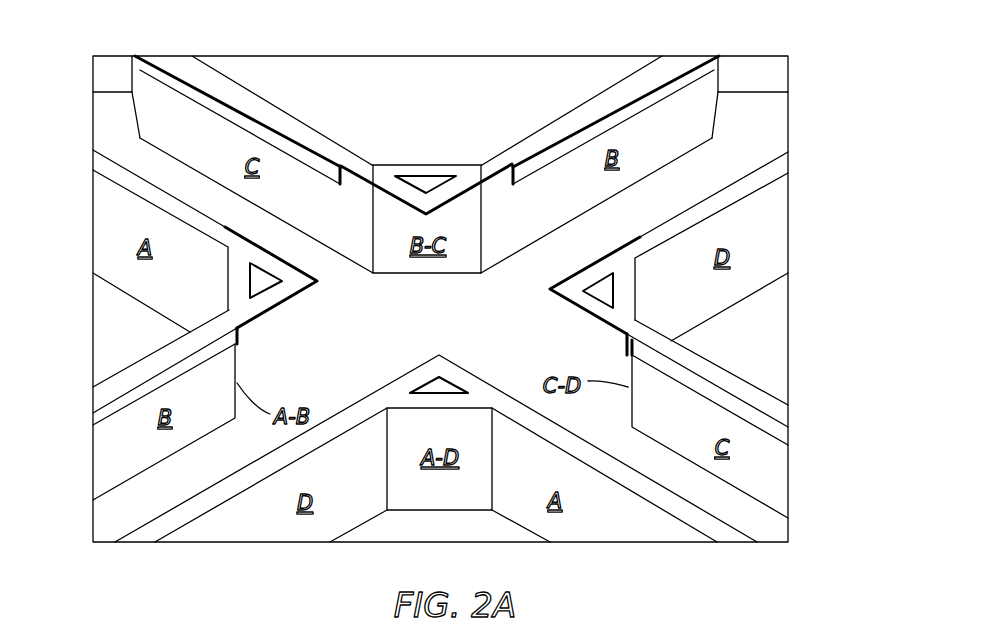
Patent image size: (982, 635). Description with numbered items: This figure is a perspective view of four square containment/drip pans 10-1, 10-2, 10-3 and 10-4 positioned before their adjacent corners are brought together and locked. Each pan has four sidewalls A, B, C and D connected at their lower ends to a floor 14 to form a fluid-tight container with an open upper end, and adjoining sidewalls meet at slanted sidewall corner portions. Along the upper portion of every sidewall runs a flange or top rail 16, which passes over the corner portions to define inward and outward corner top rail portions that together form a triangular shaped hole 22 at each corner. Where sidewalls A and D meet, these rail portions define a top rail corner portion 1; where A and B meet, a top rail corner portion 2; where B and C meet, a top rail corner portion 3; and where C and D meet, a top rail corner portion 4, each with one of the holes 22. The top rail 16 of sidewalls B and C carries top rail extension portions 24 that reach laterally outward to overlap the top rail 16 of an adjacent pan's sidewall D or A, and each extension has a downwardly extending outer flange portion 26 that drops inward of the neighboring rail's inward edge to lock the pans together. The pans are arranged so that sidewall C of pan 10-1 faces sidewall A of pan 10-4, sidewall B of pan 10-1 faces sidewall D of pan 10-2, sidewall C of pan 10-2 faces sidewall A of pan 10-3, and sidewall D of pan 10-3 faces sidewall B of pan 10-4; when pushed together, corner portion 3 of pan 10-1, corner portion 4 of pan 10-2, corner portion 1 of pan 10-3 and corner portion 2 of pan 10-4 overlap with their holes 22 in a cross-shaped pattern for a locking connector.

The top rail corner portion 1 is at (424, 362).
The top rail corner portion 2 is at (320, 283).
The top rail corner portion 3 is at (440, 212).
The top rail corner portion 4 is at (547, 290).
The pan 10-1 is at (436, 80).
The pan 10-2 is at (780, 300).
The pan 10-3 is at (380, 532).
The pan 10-4 is at (105, 300).
The floor 14 is at (440, 299).
The top rail 16 is at (755, 170).
The triangular shaped hole 22 is at (428, 178).
The top rail extension portion 24 is at (214, 84).
The outer flange portion 26 is at (660, 98).